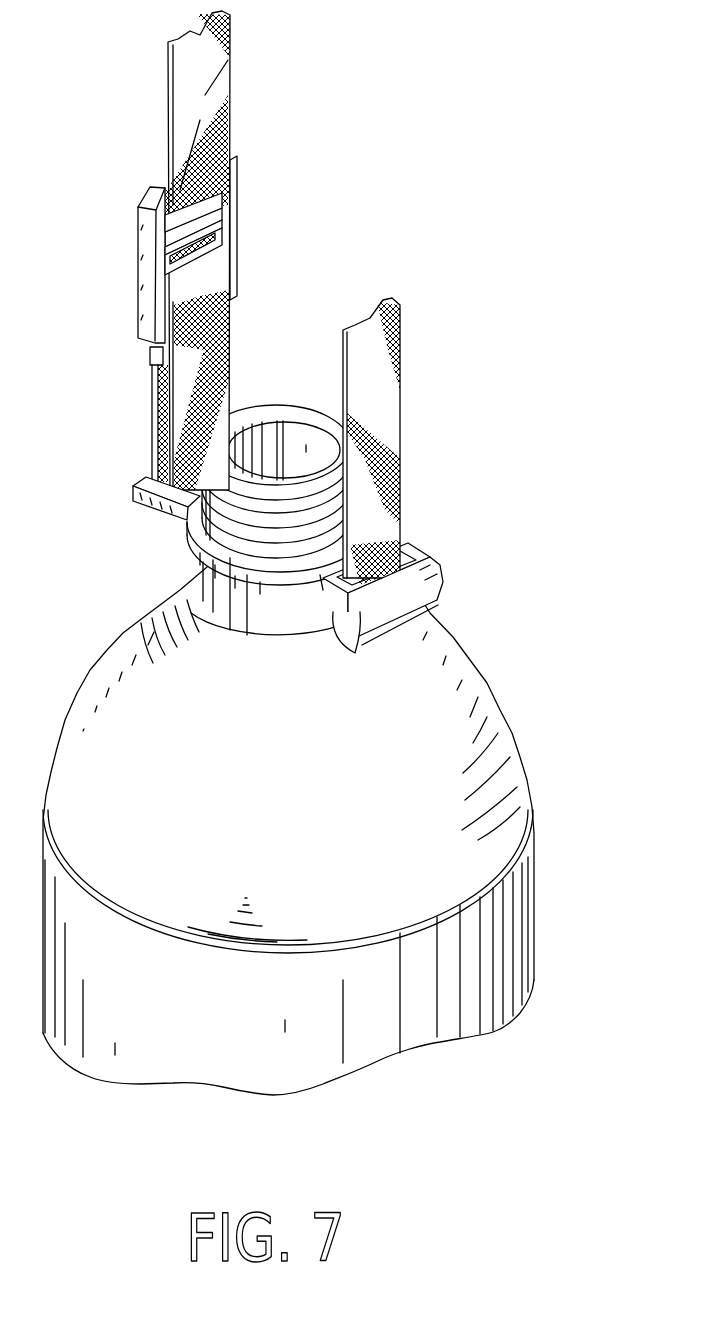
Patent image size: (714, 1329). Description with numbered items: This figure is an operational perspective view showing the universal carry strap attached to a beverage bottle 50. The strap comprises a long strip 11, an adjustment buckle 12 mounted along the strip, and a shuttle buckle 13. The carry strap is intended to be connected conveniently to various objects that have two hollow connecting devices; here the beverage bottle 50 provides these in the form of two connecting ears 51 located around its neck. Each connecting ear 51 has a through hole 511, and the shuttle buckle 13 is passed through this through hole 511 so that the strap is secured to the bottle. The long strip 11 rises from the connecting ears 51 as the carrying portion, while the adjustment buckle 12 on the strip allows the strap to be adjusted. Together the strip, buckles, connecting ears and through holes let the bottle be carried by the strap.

The long strip 11 is at (222, 82).
The adjustment buckle 12 is at (140, 262).
The shuttle buckle 13 is at (363, 627).
The beverage bottle 50 is at (503, 813).
The connecting ear 51 is at (455, 540).
The through hole 511 is at (323, 577).